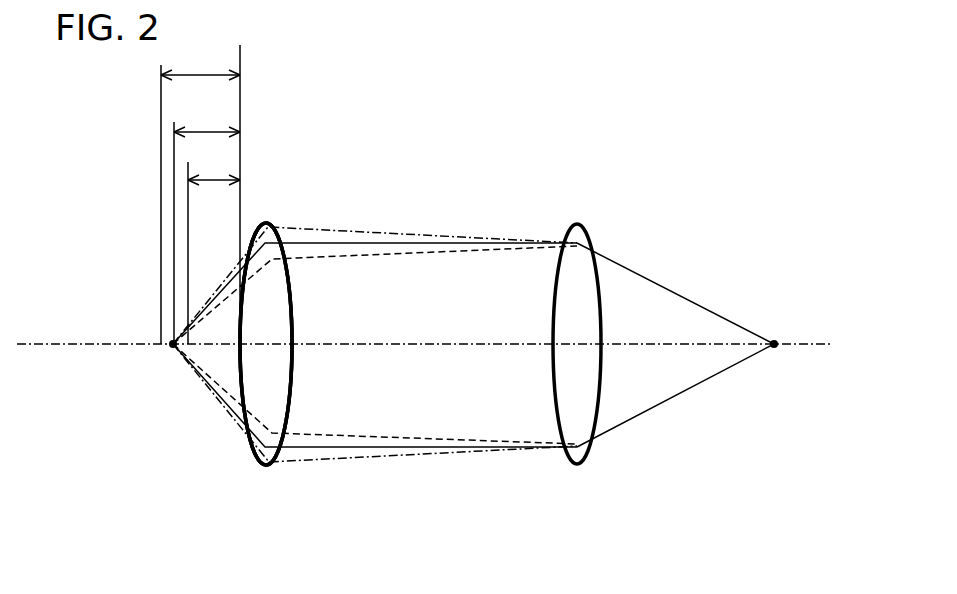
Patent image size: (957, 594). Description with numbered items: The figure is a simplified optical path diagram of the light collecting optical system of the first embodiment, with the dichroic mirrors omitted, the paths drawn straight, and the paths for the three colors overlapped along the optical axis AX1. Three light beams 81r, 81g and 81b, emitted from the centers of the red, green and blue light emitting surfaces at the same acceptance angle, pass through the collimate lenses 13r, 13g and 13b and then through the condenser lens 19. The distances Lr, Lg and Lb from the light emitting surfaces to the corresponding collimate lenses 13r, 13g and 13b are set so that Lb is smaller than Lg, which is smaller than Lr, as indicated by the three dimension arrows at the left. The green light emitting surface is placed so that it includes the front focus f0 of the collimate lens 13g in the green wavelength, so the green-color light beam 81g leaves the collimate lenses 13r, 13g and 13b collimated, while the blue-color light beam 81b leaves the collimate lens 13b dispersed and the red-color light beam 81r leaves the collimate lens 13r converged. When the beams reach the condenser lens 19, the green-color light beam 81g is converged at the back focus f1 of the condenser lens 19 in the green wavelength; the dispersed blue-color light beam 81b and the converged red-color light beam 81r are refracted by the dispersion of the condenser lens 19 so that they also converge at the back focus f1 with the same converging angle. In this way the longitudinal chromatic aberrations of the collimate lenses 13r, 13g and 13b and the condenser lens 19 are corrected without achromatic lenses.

The optical axis AX1 is at (103, 344).
The distance from red light emitting surface to collimate lens Lr is at (200, 194).
The distance from green light emitting surface to collimate lens Lg is at (207, 228).
The distance from blue light emitting surface to collimate lens Lb is at (214, 253).
The front focus f0 is at (172, 352).
The back focus f1 is at (772, 352).
The collimate lens 13r is at (270, 224).
The collimate lens 13g is at (272, 289).
The collimate lens 13b is at (272, 300).
The red-color light beam 81r is at (377, 233).
The green-color light beam 81g is at (435, 245).
The blue-color light beam 81b is at (482, 250).
The condenser lens 19 is at (578, 222).